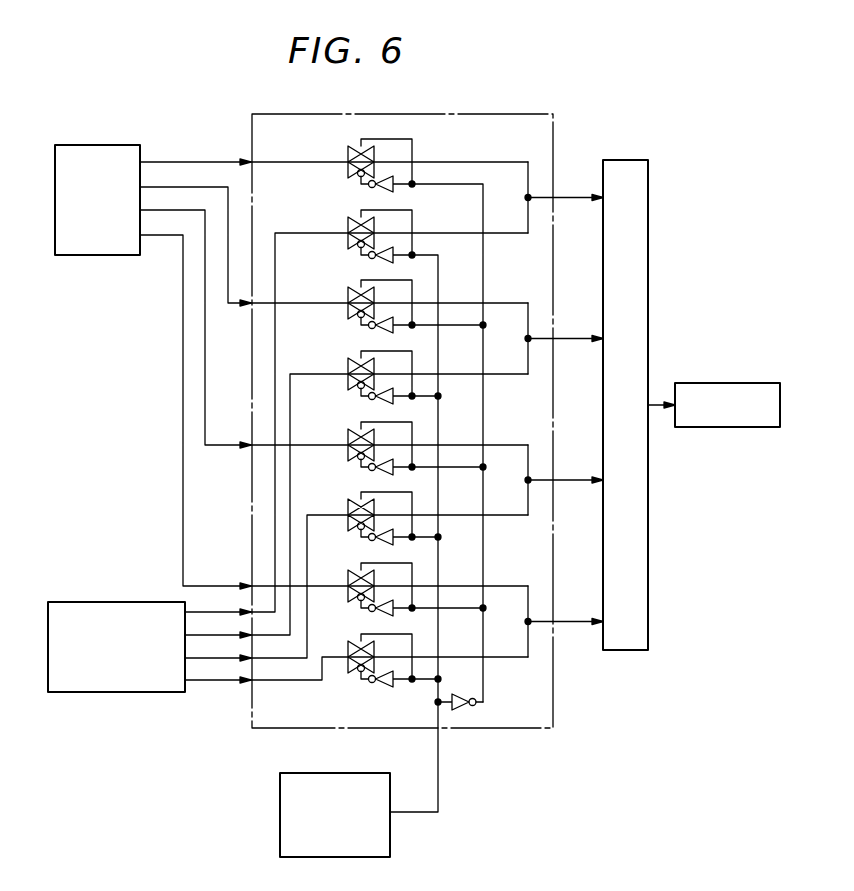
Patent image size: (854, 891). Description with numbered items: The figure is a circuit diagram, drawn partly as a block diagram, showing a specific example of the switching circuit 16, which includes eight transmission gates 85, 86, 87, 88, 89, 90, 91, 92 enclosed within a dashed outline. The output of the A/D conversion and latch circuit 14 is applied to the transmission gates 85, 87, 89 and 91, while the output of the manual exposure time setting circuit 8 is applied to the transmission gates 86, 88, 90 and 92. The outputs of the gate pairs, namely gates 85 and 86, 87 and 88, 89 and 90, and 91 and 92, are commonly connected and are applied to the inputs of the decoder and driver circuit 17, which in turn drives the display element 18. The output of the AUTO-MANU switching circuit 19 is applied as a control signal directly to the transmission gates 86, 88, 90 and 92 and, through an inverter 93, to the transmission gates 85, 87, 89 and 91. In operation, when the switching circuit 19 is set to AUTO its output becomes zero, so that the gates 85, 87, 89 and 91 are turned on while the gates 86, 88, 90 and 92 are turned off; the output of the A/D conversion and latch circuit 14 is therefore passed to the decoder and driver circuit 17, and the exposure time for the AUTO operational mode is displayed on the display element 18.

The manual exposure time setting circuit 8 is at (165, 612).
The A/D conversion and latch circuit 14 is at (123, 160).
The switching circuit 16 is at (250, 140).
The decoder and driver circuit 17 is at (606, 158).
The display element 18 is at (695, 384).
The AUTO-MANU switching circuit 19 is at (283, 806).
The transmission gate 85 is at (366, 160).
The transmission gate 86 is at (366, 231).
The transmission gate 87 is at (366, 301).
The transmission gate 88 is at (366, 372).
The transmission gate 89 is at (366, 443).
The transmission gate 90 is at (366, 513).
The transmission gate 91 is at (366, 584).
The transmission gate 92 is at (366, 655).
The inverter 93 is at (460, 690).